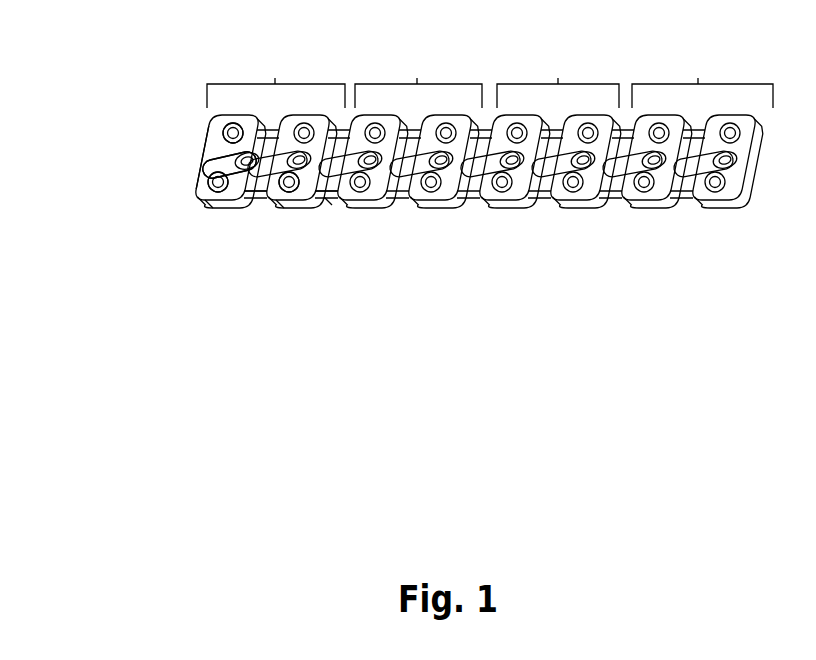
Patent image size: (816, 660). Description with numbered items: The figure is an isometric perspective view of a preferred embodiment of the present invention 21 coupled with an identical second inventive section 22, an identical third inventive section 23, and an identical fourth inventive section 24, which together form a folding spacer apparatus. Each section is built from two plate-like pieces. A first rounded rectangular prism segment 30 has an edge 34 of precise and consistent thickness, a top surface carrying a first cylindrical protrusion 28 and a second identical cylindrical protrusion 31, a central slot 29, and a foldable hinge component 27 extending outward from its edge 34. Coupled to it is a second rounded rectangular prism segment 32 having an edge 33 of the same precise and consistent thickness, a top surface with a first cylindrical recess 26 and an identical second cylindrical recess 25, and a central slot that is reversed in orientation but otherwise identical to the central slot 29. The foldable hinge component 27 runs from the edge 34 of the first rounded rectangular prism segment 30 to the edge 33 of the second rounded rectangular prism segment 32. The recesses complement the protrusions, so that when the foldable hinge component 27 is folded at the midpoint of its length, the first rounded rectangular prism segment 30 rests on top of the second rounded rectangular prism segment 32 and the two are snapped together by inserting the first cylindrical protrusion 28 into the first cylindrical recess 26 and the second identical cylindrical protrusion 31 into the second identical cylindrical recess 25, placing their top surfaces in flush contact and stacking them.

The preferred embodiment of the present invention 21 is at (273, 121).
The second inventive section 22 is at (405, 121).
The third inventive section 23 is at (547, 121).
The fourth inventive section 24 is at (688, 121).
The second cylindrical recess 25 is at (323, 200).
The first cylindrical recess 26 is at (312, 197).
The foldable hinge component 27 is at (265, 205).
The first cylindrical protrusion 28 is at (193, 197).
The central slot 29 is at (200, 167).
The first rounded rectangular prism segment 30 is at (207, 138).
The second cylindrical protrusion 31 is at (213, 127).
The second rounded rectangular prism segment 32 is at (317, 202).
The edge 33 is at (290, 203).
The edge 34 is at (213, 212).